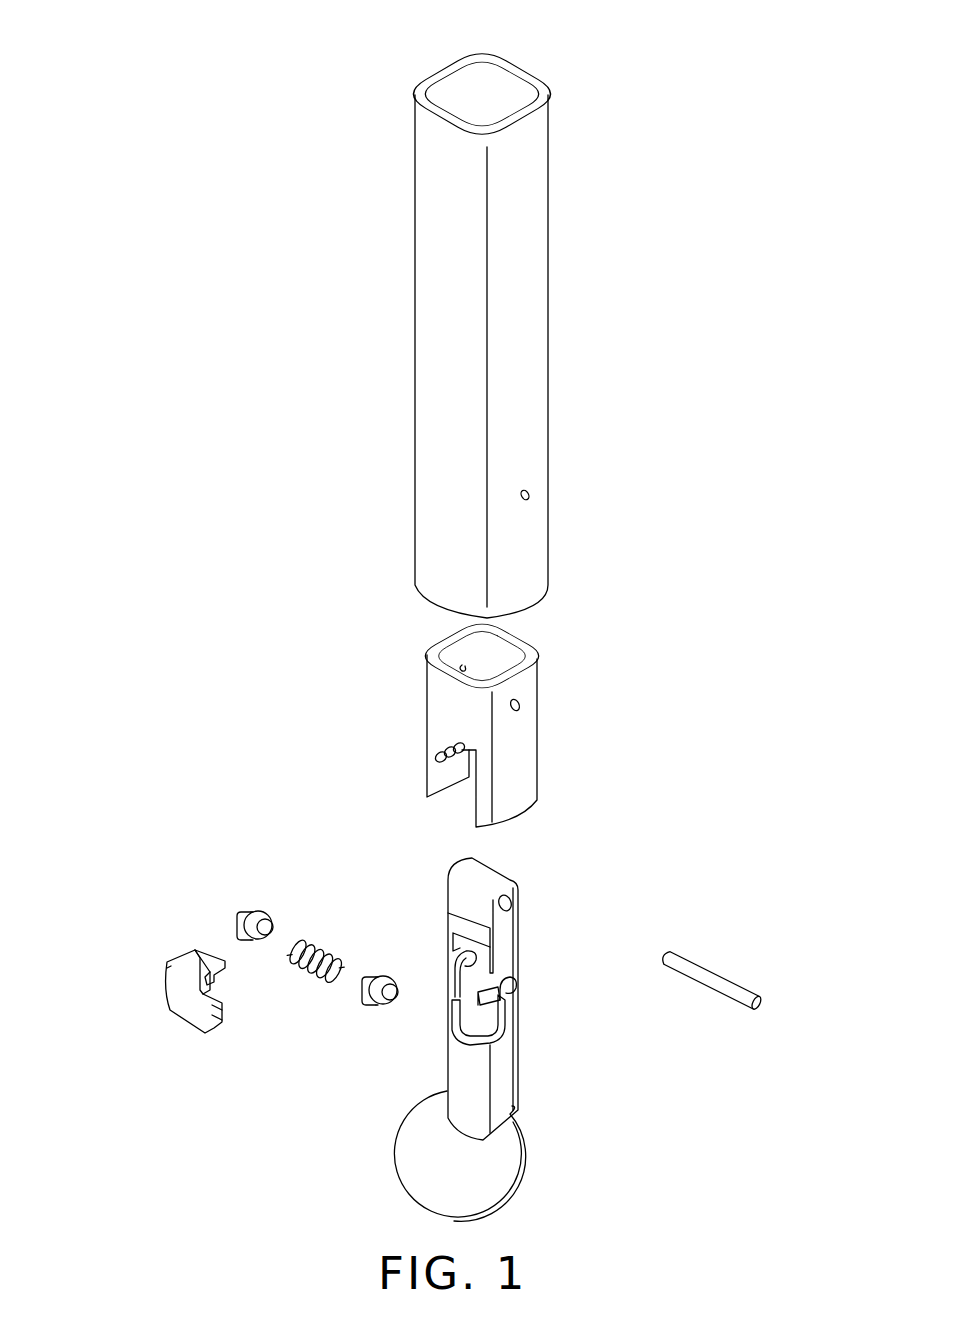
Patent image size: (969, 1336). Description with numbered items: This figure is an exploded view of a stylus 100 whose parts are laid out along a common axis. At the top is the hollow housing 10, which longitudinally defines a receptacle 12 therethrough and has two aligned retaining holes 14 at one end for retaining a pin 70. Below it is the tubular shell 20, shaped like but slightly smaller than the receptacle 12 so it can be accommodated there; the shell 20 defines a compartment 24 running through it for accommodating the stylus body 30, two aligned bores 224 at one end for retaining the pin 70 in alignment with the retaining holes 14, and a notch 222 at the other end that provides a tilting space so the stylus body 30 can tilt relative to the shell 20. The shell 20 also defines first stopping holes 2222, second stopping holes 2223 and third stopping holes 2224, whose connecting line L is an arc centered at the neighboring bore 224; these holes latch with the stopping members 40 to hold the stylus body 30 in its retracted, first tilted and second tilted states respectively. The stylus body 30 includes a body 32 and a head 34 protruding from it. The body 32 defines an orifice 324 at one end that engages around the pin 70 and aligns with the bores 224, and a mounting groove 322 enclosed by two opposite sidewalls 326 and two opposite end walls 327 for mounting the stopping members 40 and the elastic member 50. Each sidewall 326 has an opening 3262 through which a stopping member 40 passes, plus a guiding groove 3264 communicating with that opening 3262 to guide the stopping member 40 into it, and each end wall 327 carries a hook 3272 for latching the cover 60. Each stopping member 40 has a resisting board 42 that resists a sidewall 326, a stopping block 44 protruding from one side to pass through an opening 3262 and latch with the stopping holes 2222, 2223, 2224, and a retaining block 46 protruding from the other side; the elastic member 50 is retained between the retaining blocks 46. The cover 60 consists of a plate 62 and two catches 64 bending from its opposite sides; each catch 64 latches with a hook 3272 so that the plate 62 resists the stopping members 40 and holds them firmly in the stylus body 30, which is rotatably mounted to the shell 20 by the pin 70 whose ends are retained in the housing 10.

The stylus 100 is at (420, 16).
The housing 10 is at (532, 332).
The receptacle 12 is at (500, 90).
The retaining holes 14 is at (530, 495).
The shell 20 is at (476, 724).
The compartment 24 is at (502, 655).
The bores 224 is at (522, 702).
The notch 222 is at (452, 795).
The first stopping holes 2222 is at (456, 746).
The second stopping holes 2223 is at (450, 750).
The third stopping holes 2224 is at (440, 756).
The connecting line L is at (422, 760).
The stylus body 30 is at (493, 1039).
The body 32 is at (503, 1088).
The head 34 is at (488, 1163).
The mounting groove 322 is at (453, 940).
The orifice 324 is at (512, 901).
The sidewalls 326 is at (507, 948).
The openings 3262 is at (513, 983).
The guiding groove 3264 is at (499, 997).
The end walls 327 is at (472, 993).
The hook 3272 is at (455, 968).
The stopping members 40 is at (284, 943).
The resisting board 42 is at (252, 912).
The stopping block 44 is at (238, 913).
The retaining block 46 is at (265, 925).
The elastic member 50 is at (313, 977).
The cover 60 is at (158, 990).
The plate 62 is at (185, 1008).
The catches 64 is at (190, 963).
The pin 70 is at (727, 977).